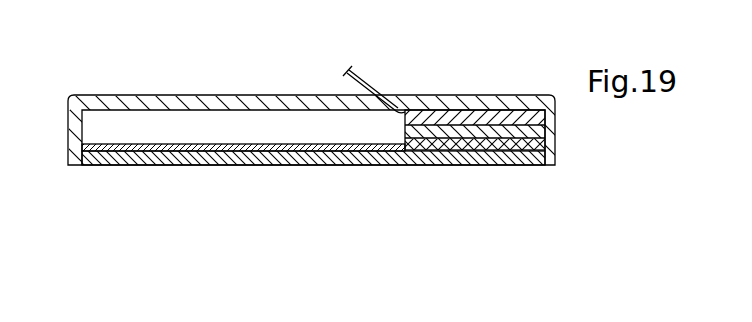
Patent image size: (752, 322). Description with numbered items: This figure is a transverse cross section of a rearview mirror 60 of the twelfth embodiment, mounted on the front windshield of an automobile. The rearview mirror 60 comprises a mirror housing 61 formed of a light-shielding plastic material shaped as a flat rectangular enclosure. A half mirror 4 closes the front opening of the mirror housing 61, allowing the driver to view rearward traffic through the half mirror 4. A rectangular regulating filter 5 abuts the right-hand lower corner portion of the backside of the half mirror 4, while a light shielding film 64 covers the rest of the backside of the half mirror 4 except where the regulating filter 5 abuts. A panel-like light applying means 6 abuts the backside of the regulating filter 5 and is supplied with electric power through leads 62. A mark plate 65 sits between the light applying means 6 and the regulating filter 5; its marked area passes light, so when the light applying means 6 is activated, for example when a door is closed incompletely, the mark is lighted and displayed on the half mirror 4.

The rearview mirror 60 is at (339, 120).
The mirror housing 61 is at (128, 95).
The leads 62 is at (367, 83).
The light shielding film 64 is at (205, 146).
The light applying means 6 is at (506, 133).
The mark plate 65 is at (542, 128).
The regulating filter 5 is at (420, 150).
The half mirror 4 is at (222, 165).